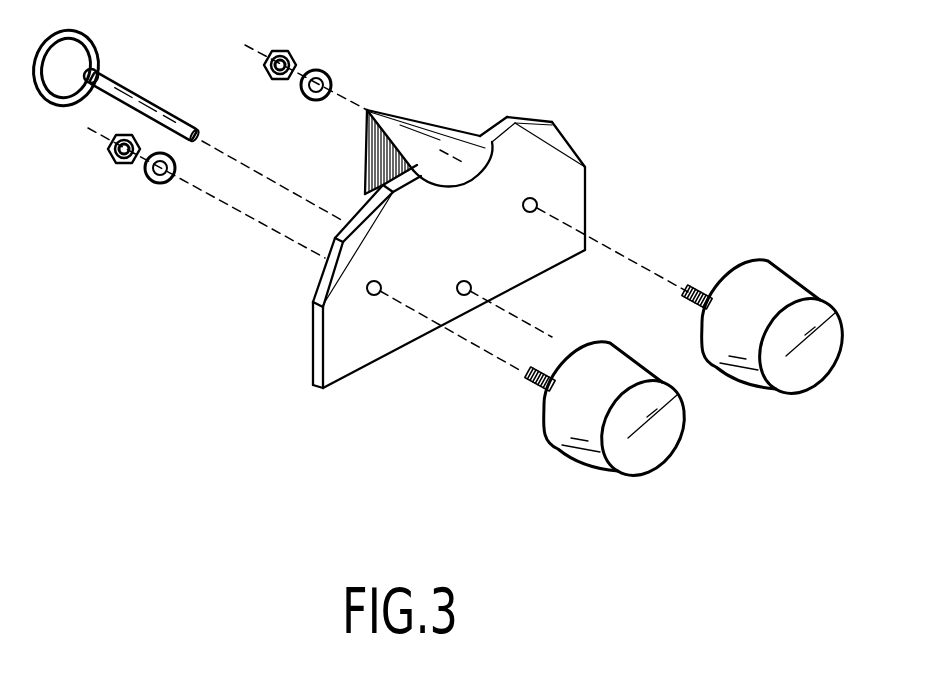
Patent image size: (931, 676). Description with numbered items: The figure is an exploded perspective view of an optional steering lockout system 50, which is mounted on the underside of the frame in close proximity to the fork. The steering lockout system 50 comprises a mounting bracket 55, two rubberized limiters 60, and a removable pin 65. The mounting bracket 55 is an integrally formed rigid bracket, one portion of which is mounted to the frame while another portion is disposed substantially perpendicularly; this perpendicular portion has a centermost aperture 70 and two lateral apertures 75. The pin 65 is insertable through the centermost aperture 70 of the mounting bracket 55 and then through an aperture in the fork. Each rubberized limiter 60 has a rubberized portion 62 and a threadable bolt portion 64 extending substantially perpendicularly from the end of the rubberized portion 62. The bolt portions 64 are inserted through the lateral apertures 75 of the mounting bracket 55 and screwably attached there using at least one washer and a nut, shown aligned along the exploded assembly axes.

The steering lockout system 50 is at (768, 110).
The mounting bracket 55 is at (587, 148).
The rubberized limiter 60 is at (665, 473).
The rubberized portion 62 is at (686, 415).
The threadable bolt portion 64 is at (528, 387).
The pin 65 is at (143, 92).
The centermost aperture 70 is at (472, 287).
The lateral apertures 75 is at (538, 204).